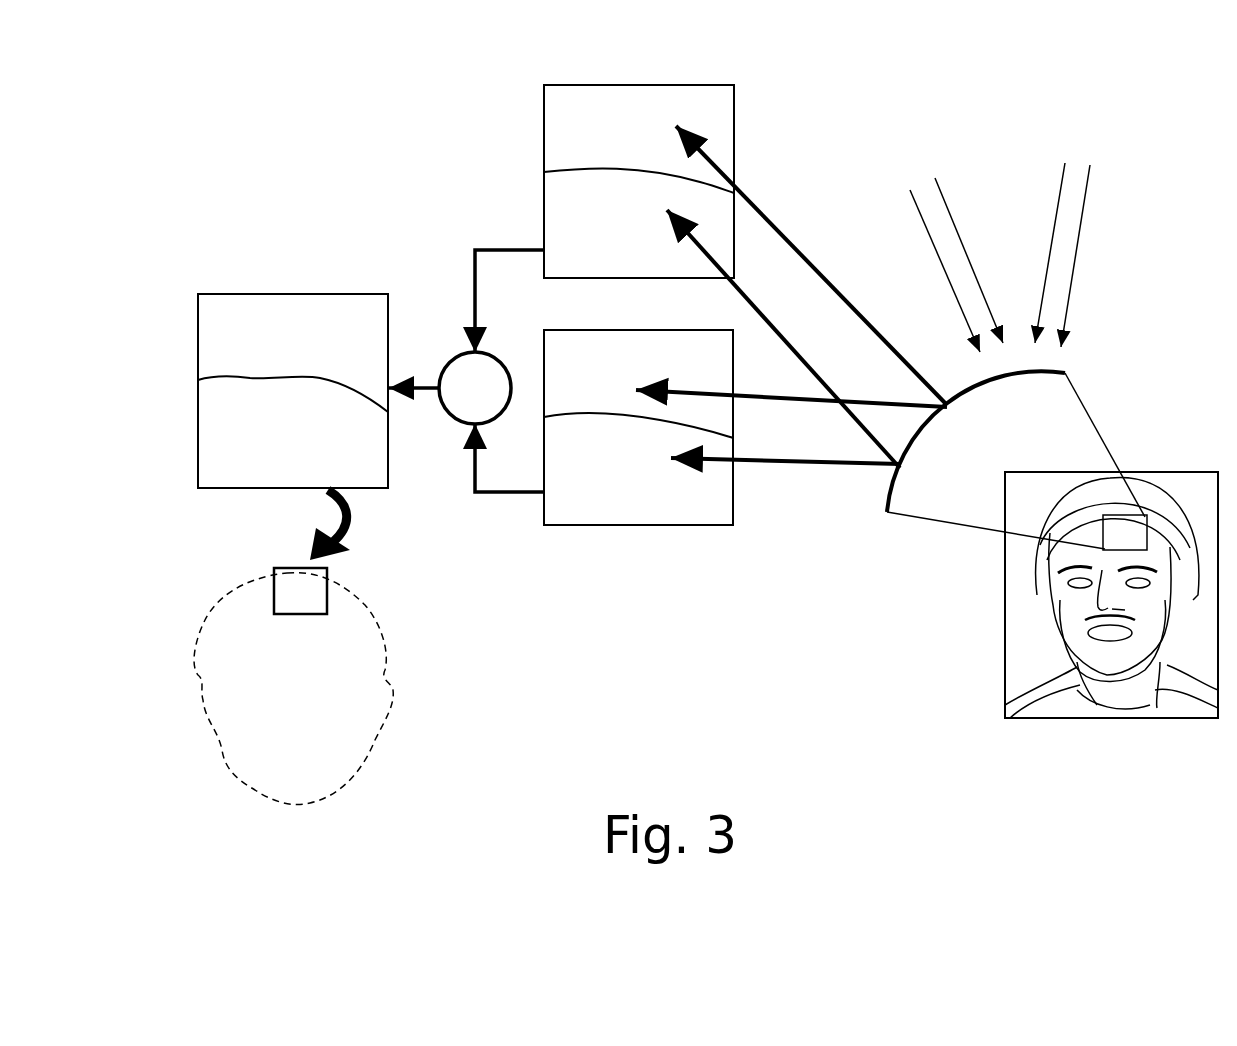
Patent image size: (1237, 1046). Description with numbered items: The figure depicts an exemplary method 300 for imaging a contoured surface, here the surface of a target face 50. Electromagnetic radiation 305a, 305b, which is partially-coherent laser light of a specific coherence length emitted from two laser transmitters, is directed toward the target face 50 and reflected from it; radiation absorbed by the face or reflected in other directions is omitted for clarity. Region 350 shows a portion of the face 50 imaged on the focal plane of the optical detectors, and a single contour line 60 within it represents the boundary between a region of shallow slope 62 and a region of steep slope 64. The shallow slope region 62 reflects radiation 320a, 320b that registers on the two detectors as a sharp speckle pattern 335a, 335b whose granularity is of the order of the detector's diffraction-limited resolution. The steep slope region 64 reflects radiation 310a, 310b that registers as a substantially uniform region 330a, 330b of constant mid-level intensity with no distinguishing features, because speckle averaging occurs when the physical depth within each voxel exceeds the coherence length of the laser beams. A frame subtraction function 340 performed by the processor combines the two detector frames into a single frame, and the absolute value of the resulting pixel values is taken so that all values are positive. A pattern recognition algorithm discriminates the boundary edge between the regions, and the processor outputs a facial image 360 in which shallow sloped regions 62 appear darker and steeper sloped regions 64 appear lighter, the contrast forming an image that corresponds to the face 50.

The method for imaging a contoured surface 300 is at (296, 98).
The electromagnetic radiation 305a is at (950, 167).
The electromagnetic radiation 305b is at (1110, 165).
The radiation reflected from steep slope region 310a is at (787, 233).
The radiation reflected from shallow slope region 320a is at (787, 331).
The radiation reflected from steep slope region 310b is at (768, 403).
The radiation reflected from shallow slope region 320b is at (837, 467).
The substantially uniform region 330a is at (553, 118).
The sharp speckle pattern 335a is at (550, 200).
The substantially uniform region 330b is at (618, 347).
The sharp speckle pattern 335b is at (603, 517).
The frame subtraction function 340 is at (448, 368).
The region 350 is at (198, 402).
The contour line 60 is at (250, 378).
The shallow slope region 62 is at (238, 477).
The steep slope region 64 is at (252, 312).
The facial image 360 is at (390, 716).
The target face 50 is at (1012, 672).